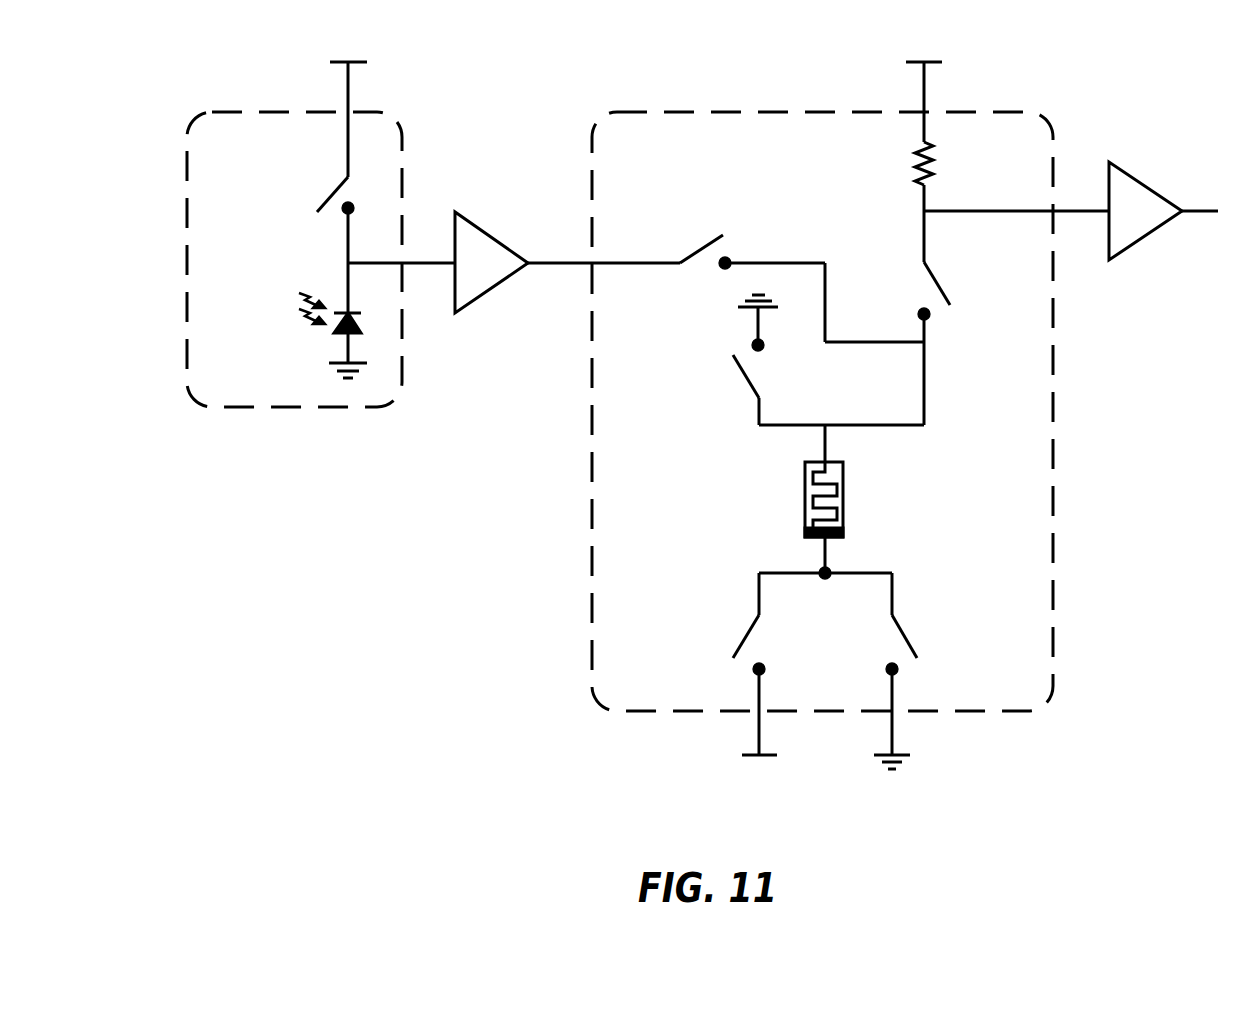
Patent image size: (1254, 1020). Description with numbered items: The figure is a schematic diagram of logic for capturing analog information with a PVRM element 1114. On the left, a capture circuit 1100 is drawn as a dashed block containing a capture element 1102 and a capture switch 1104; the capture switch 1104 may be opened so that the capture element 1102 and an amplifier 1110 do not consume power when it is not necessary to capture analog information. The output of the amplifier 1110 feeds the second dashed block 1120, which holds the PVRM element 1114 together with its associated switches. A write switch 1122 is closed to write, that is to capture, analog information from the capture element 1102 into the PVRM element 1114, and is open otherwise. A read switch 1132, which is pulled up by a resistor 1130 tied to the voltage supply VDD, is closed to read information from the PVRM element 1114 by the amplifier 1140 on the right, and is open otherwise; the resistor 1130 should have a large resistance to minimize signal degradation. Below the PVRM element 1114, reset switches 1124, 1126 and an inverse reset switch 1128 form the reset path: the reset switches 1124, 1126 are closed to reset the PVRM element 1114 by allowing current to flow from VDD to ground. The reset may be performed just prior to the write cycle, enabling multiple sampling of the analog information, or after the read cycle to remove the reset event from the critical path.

The capture circuit 1100 is at (258, 434).
The capture element 1102 is at (318, 334).
The capture switch 1104 is at (333, 185).
The amplifier 1110 is at (483, 228).
The PVRM element 1114 is at (848, 488).
The memory circuit 1120 is at (578, 439).
The write switch 1122 is at (703, 243).
The reset switch 1124 is at (745, 380).
The reset switch 1126 is at (740, 640).
The inverse reset switch 1128 is at (1022, 597).
The resistor 1130 is at (912, 167).
The read switch 1132 is at (942, 286).
The amplifier 1140 is at (1140, 175).